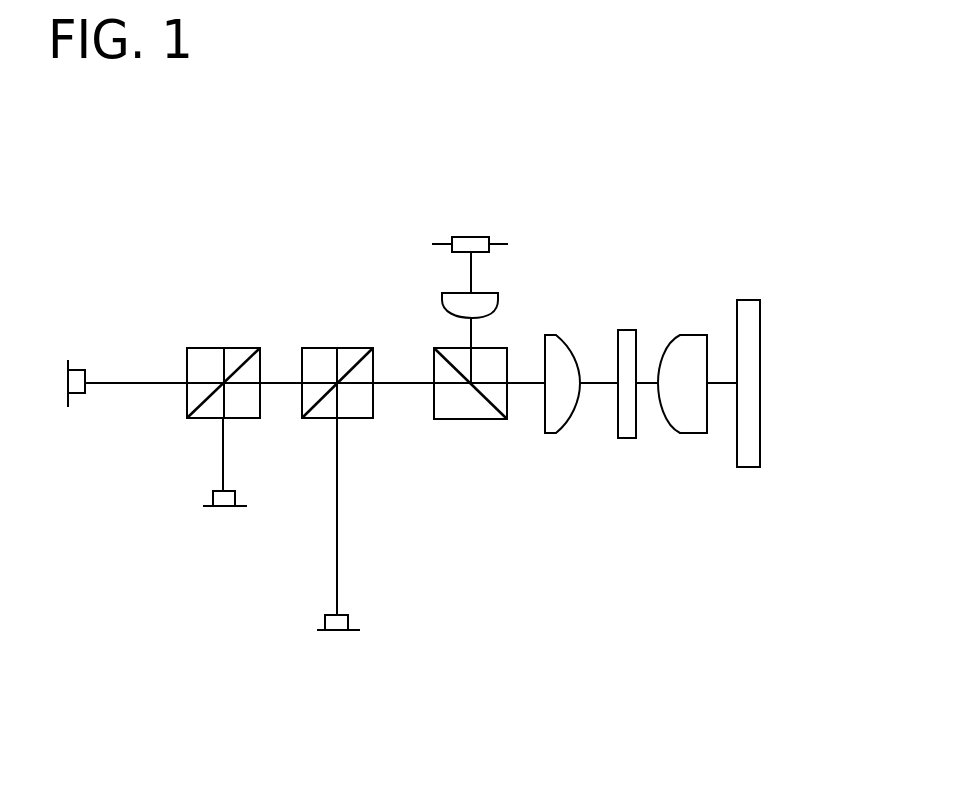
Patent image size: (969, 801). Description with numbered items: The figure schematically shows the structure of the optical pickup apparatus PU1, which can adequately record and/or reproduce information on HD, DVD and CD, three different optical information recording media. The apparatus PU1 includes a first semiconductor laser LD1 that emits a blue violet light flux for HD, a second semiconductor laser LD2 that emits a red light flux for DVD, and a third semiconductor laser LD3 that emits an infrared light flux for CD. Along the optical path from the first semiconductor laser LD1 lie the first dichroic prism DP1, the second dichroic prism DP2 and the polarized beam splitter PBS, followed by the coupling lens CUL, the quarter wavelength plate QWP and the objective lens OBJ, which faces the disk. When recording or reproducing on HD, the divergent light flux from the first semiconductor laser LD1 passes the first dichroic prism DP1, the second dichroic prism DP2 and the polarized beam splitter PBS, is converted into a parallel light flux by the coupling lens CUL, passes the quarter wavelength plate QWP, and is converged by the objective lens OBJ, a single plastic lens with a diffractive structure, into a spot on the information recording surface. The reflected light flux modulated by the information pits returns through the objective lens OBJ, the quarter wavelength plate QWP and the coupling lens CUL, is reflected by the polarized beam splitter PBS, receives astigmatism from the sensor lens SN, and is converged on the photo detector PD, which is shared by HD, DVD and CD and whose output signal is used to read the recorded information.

The optical pickup apparatus PU1 is at (720, 232).
The first semiconductor laser LD1 is at (68, 360).
The second semiconductor laser LD2 is at (223, 510).
The third semiconductor laser LD3 is at (337, 635).
The first dichroic prism DP1 is at (225, 345).
The second dichroic prism DP2 is at (337, 345).
The polarized beam splitter PBS is at (472, 420).
The sensor lens SN is at (498, 300).
The photo detector PD is at (470, 235).
The coupling lens CUL is at (553, 435).
The λ/4 wavelength plate QWP is at (627, 325).
The objective lens OBJ is at (692, 437).